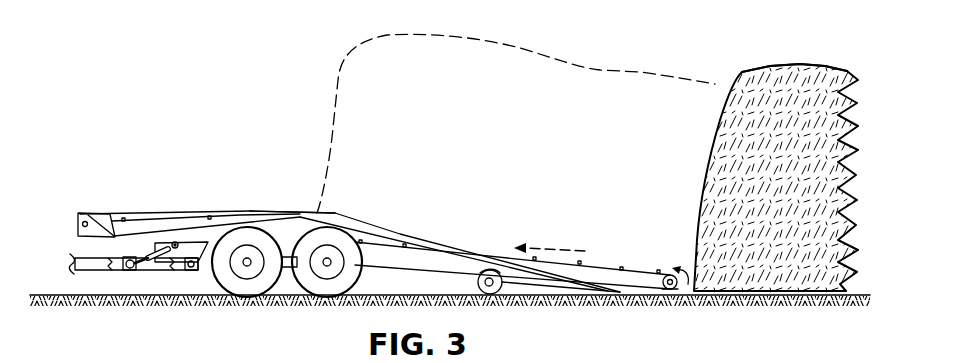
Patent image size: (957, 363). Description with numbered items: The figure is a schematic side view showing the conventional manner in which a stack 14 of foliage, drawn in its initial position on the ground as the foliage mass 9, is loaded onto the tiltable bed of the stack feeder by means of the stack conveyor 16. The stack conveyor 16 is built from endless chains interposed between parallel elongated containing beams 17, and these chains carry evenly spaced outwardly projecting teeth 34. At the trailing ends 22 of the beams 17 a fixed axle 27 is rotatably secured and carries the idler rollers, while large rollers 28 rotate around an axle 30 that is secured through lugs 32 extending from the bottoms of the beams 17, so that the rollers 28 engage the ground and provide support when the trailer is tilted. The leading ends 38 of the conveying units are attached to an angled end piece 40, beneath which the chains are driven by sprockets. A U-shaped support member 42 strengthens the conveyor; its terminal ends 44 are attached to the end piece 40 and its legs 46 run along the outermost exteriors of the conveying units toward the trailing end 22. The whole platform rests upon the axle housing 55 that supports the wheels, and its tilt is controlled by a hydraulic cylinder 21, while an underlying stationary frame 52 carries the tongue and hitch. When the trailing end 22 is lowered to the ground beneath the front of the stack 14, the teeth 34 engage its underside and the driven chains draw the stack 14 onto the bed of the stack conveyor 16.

The bale 9 is at (333, 128).
The stack 14 is at (590, 70).
The stack conveyor 16 is at (257, 82).
The containing beams 17 is at (438, 236).
The hydraulic cylinder 21 is at (143, 252).
The trailing ends 22 is at (668, 274).
The fixed axle 27 is at (654, 296).
The large rollers 28 is at (478, 283).
The axle 30 is at (498, 292).
The lugs 32 is at (556, 292).
The teeth 34 is at (576, 251).
The leading ends 38 is at (106, 232).
The angled end piece 40 is at (110, 233).
The U-shaped support member 42 is at (289, 212).
The terminal ends 44 is at (116, 230).
The legs 46 is at (227, 216).
The stationary frame 52 is at (186, 279).
The axle housing 55 is at (285, 293).